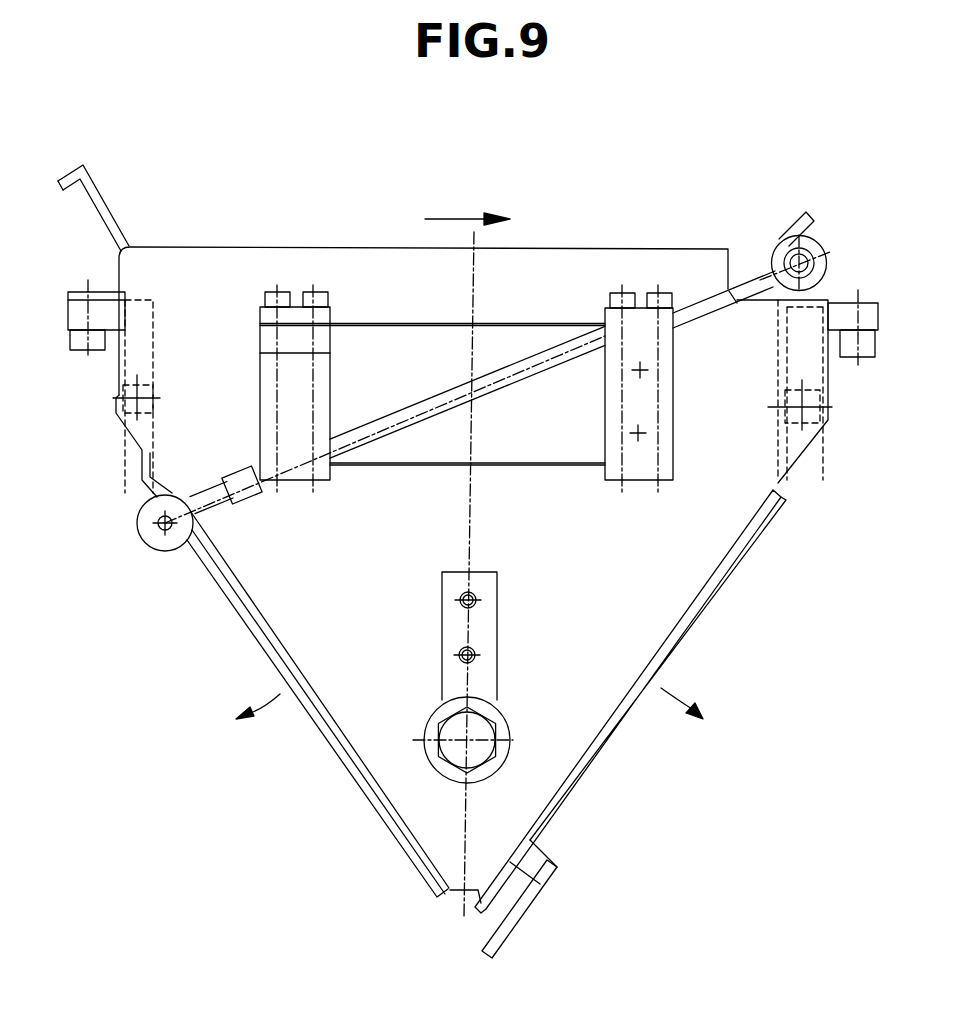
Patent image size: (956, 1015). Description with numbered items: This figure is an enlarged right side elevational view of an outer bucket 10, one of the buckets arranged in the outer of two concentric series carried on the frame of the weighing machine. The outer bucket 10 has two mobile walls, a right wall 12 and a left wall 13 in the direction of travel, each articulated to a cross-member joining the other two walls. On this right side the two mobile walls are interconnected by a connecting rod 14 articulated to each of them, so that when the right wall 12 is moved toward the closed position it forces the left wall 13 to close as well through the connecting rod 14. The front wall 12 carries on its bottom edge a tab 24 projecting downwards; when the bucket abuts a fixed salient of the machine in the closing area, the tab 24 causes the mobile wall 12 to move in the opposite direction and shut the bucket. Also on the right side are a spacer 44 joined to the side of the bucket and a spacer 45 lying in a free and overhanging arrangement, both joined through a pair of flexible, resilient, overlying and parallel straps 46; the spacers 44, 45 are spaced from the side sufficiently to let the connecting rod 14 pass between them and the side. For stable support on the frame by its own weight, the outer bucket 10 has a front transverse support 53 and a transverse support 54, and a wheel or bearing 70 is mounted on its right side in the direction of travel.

The outer bucket 10 is at (183, 257).
The right mobile wall 12 is at (700, 610).
The left mobile wall 13 is at (357, 770).
The connecting rod 14 is at (707, 293).
The tab 24 is at (498, 943).
The spacer 44 is at (668, 408).
The spacer 45 is at (270, 398).
The straps 46 is at (396, 447).
The front transverse support 53 is at (863, 352).
The transverse support 54 is at (77, 343).
The wheel or bearing 70 is at (498, 723).